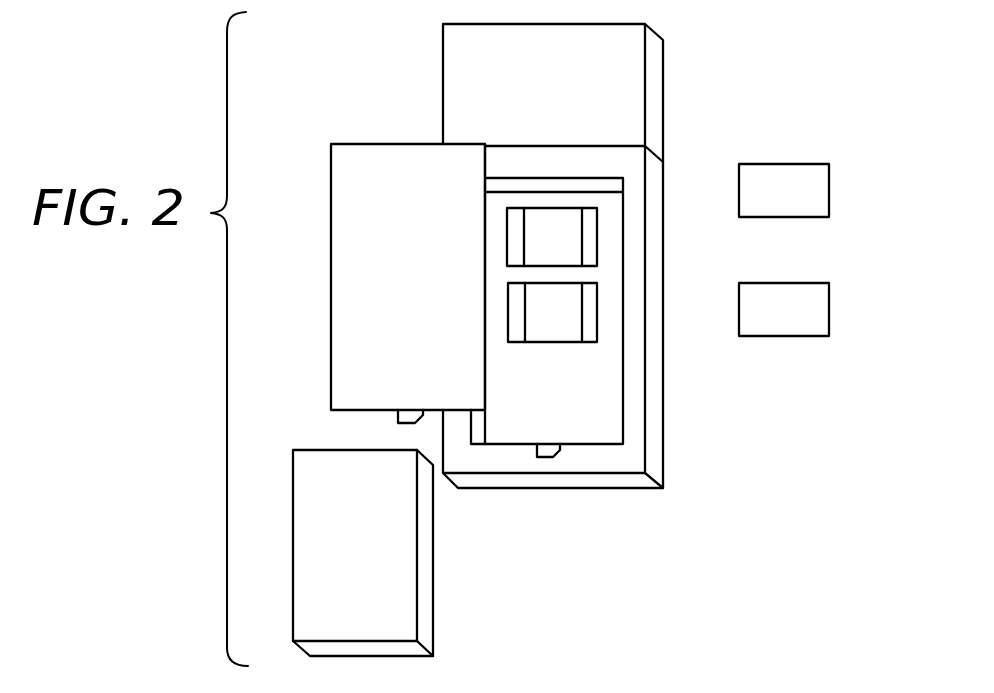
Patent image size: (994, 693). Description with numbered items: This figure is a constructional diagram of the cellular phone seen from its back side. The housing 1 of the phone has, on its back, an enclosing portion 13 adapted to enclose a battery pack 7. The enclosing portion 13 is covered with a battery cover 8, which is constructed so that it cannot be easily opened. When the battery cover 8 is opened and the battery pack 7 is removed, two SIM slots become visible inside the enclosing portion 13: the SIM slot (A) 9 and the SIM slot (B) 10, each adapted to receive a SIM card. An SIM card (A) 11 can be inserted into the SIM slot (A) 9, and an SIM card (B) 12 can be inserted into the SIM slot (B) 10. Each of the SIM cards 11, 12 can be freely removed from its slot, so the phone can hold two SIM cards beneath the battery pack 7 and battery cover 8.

The housing 1 is at (463, 62).
The battery pack 7 is at (393, 565).
The battery cover 8 is at (357, 187).
The SIM slot (A) 9 is at (597, 235).
The SIM slot (B) 10 is at (597, 312).
The SIM card (A) 11 is at (820, 190).
The SIM card (B) 12 is at (820, 312).
The enclosing portion 13 is at (610, 410).